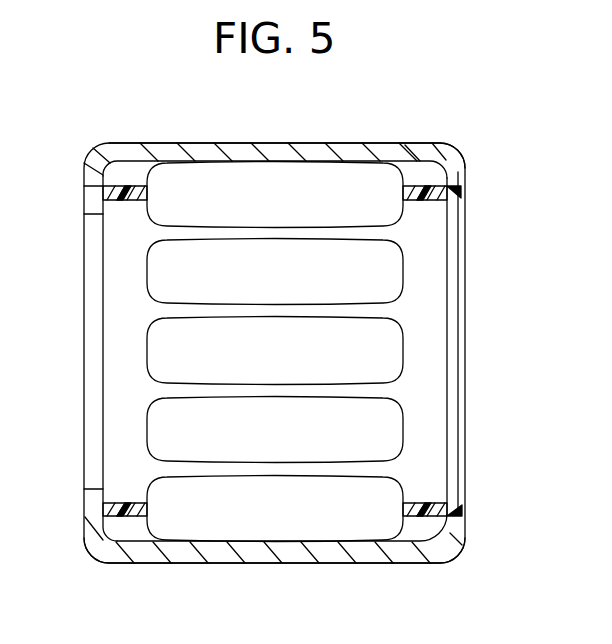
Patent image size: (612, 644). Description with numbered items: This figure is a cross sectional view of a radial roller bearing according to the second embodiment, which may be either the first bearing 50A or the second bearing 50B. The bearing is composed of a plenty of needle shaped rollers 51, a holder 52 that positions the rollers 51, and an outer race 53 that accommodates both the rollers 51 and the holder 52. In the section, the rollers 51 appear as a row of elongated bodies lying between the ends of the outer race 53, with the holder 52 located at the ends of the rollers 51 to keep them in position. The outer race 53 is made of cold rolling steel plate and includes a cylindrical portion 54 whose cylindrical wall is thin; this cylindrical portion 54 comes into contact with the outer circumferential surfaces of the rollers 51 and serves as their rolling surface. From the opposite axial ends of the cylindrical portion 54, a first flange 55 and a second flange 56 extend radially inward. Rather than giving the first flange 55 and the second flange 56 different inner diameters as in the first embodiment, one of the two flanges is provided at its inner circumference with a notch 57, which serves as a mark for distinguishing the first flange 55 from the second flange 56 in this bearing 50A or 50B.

The first bearing 50A is at (271, 351).
The second bearing 50B is at (155, 138).
The needle shaped rollers 51 is at (390, 213).
The holder 52 is at (428, 200).
The outer race 53 is at (353, 150).
The cylindrical portion 54 is at (372, 552).
The first flange 55 is at (92, 516).
The second flange 56 is at (455, 511).
The notch 57 is at (95, 201).